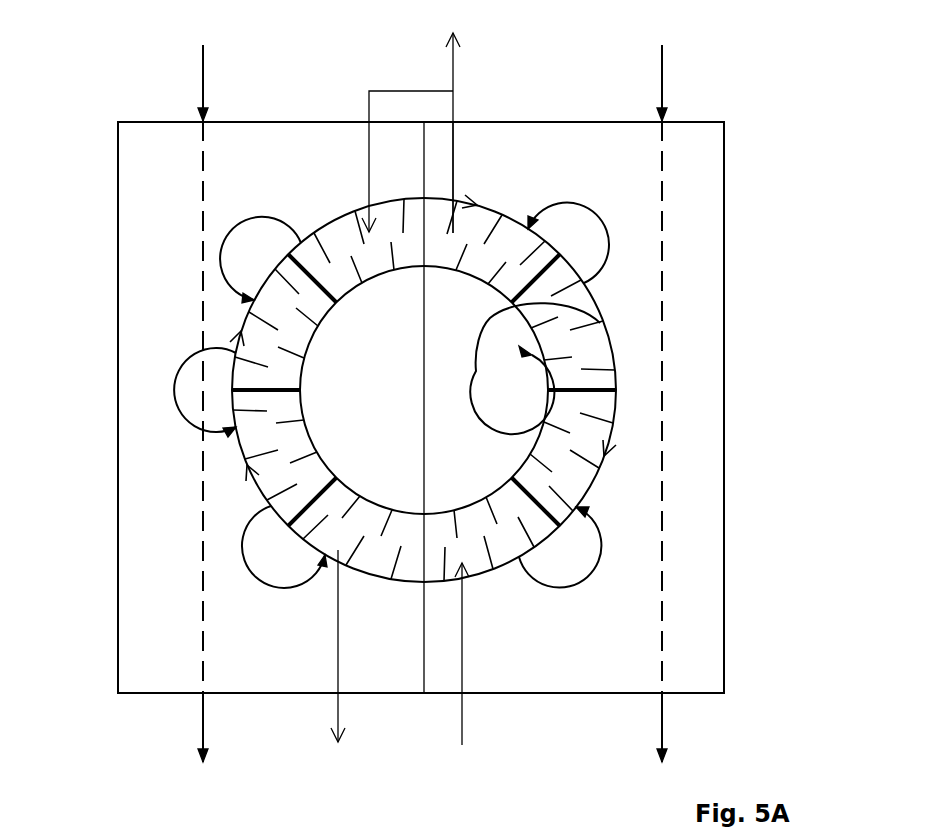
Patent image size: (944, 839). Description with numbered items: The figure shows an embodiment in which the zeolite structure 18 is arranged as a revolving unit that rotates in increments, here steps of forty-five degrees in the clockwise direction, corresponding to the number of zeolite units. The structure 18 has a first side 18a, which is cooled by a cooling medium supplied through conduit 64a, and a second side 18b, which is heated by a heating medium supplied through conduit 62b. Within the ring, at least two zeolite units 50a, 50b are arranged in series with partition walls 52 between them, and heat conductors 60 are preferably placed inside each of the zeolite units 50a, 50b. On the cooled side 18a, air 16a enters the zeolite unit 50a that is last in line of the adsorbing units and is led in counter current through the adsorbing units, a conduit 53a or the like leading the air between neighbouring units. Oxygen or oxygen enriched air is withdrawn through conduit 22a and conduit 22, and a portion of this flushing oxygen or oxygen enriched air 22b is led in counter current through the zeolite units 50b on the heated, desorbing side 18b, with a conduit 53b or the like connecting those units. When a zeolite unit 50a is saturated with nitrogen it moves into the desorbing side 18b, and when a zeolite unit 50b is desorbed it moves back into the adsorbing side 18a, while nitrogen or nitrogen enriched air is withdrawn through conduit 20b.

The zeolite structure 18 is at (788, 405).
The first side 18a is at (705, 618).
The second side 18b is at (117, 615).
The conduit 62b is at (198, 85).
The conduit 64a is at (662, 100).
The conduit 22 is at (453, 78).
The conduit 22a is at (453, 161).
The flushing oxygen or oxygen enriched air 22b is at (367, 108).
The zeolite unit 50a is at (498, 553).
The zeolite unit 50b is at (338, 234).
The partition wall 52 is at (577, 386).
The heat conductor 60 is at (557, 494).
The conduit 53a is at (607, 227).
The conduit 53b is at (175, 387).
The conduit 20b is at (338, 707).
The air 16a is at (462, 743).